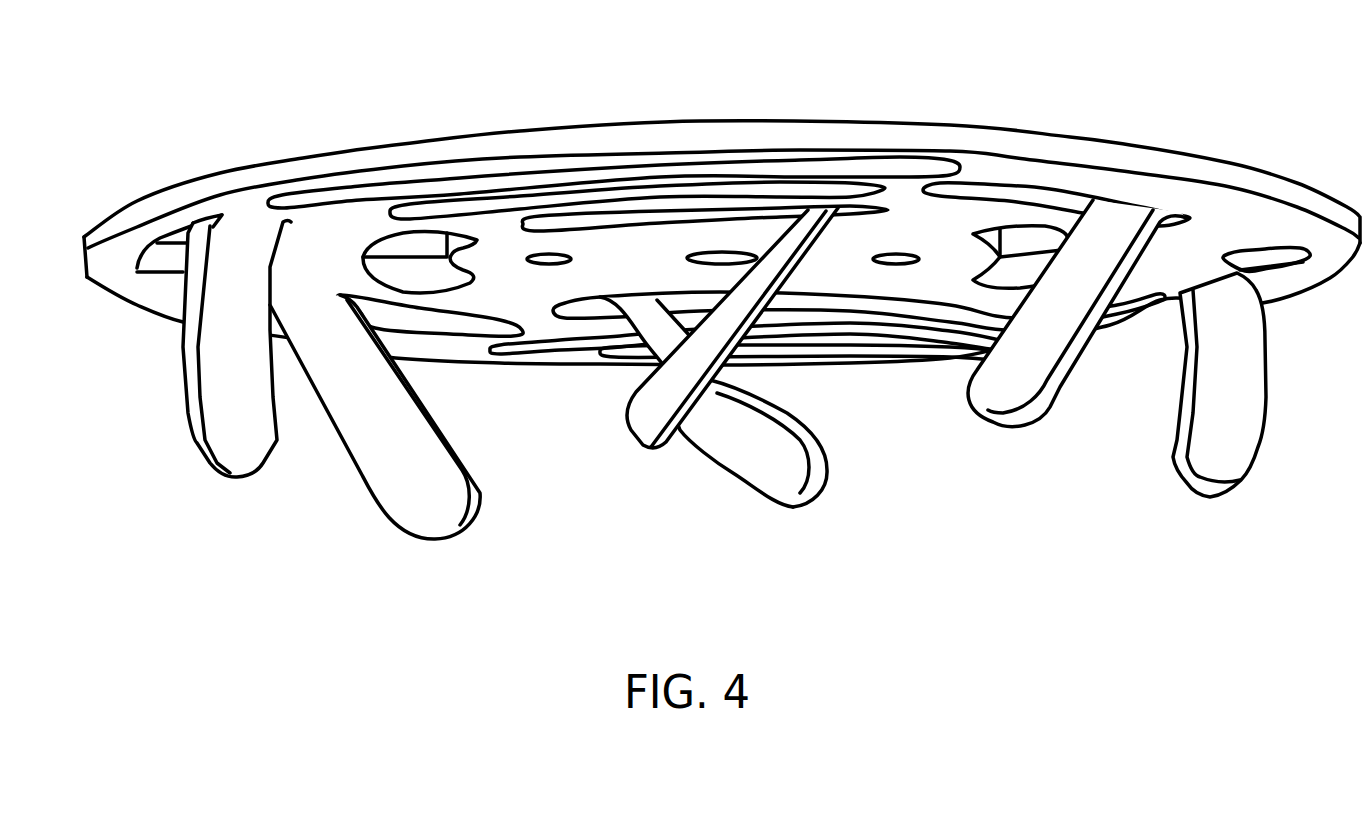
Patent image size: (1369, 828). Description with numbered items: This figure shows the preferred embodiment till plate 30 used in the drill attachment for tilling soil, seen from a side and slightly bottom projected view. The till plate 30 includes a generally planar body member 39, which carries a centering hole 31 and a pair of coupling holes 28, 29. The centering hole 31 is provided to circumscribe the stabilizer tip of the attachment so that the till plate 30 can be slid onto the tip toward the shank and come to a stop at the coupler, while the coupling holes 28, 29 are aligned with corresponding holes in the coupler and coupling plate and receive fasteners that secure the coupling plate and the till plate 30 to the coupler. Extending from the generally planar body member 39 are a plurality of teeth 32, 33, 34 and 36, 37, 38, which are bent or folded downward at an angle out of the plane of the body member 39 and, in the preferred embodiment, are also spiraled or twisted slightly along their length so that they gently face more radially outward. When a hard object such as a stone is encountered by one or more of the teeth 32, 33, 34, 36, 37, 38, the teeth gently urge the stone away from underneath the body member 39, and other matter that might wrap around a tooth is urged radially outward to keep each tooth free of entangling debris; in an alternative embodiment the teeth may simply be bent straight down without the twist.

The coupling hole 28 is at (533, 262).
The coupling hole 29 is at (888, 262).
The till plate 30 is at (1071, 126).
The centering hole 31 is at (720, 253).
The tooth 32 is at (232, 455).
The tooth 33 is at (1213, 458).
The tooth 34 is at (1000, 386).
The tooth 36 is at (427, 510).
The tooth 37 is at (785, 472).
The tooth 38 is at (642, 408).
The generally planar body member 39 is at (140, 296).